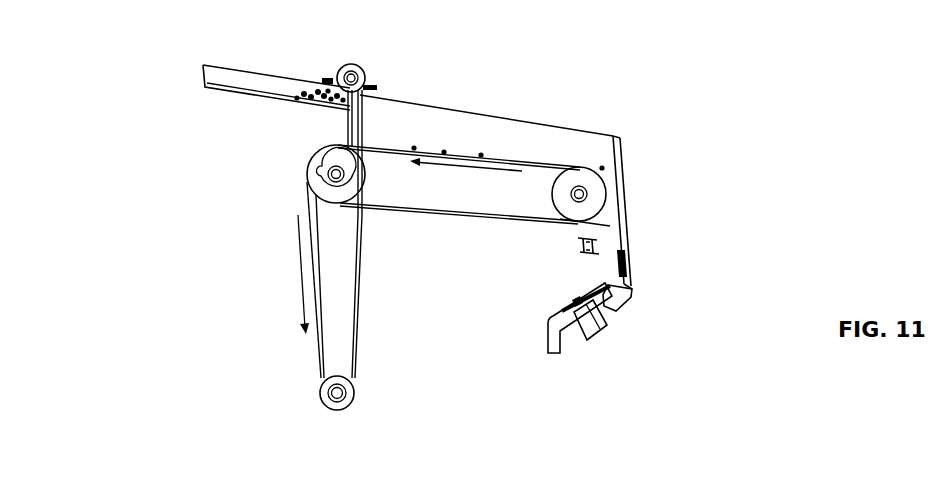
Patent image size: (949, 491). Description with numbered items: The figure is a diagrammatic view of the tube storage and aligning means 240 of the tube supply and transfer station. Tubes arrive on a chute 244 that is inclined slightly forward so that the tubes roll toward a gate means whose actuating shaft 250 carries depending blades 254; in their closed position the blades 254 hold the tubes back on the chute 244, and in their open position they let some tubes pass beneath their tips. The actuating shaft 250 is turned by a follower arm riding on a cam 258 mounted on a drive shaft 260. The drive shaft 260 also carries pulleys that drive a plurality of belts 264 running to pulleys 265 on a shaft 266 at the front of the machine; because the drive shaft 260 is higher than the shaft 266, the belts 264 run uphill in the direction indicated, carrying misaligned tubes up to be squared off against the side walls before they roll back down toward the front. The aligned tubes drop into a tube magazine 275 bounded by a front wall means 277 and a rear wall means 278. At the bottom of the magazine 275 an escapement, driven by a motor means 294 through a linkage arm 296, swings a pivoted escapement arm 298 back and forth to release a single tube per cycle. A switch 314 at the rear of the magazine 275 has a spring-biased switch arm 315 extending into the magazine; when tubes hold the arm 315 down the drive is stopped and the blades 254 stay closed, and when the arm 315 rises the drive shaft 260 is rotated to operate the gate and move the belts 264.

The tube storage and aligning means 240 is at (500, 68).
The chute 244 is at (228, 92).
The actuating shaft 250 is at (352, 74).
The depending blades 254 is at (330, 82).
The cam 258 is at (328, 188).
The drive shaft 260 is at (330, 175).
The belts 264 is at (470, 215).
The pulleys 265 is at (593, 186).
The shaft 266 is at (587, 197).
The tube magazine 275 is at (640, 211).
The front wall means 277 is at (623, 243).
The rear wall means 278 is at (600, 224).
The motor means 294 is at (593, 338).
The linkage arm 296 is at (567, 298).
The escapement arm 298 is at (620, 303).
The switch 314 is at (578, 246).
The switch arm 315 is at (613, 243).